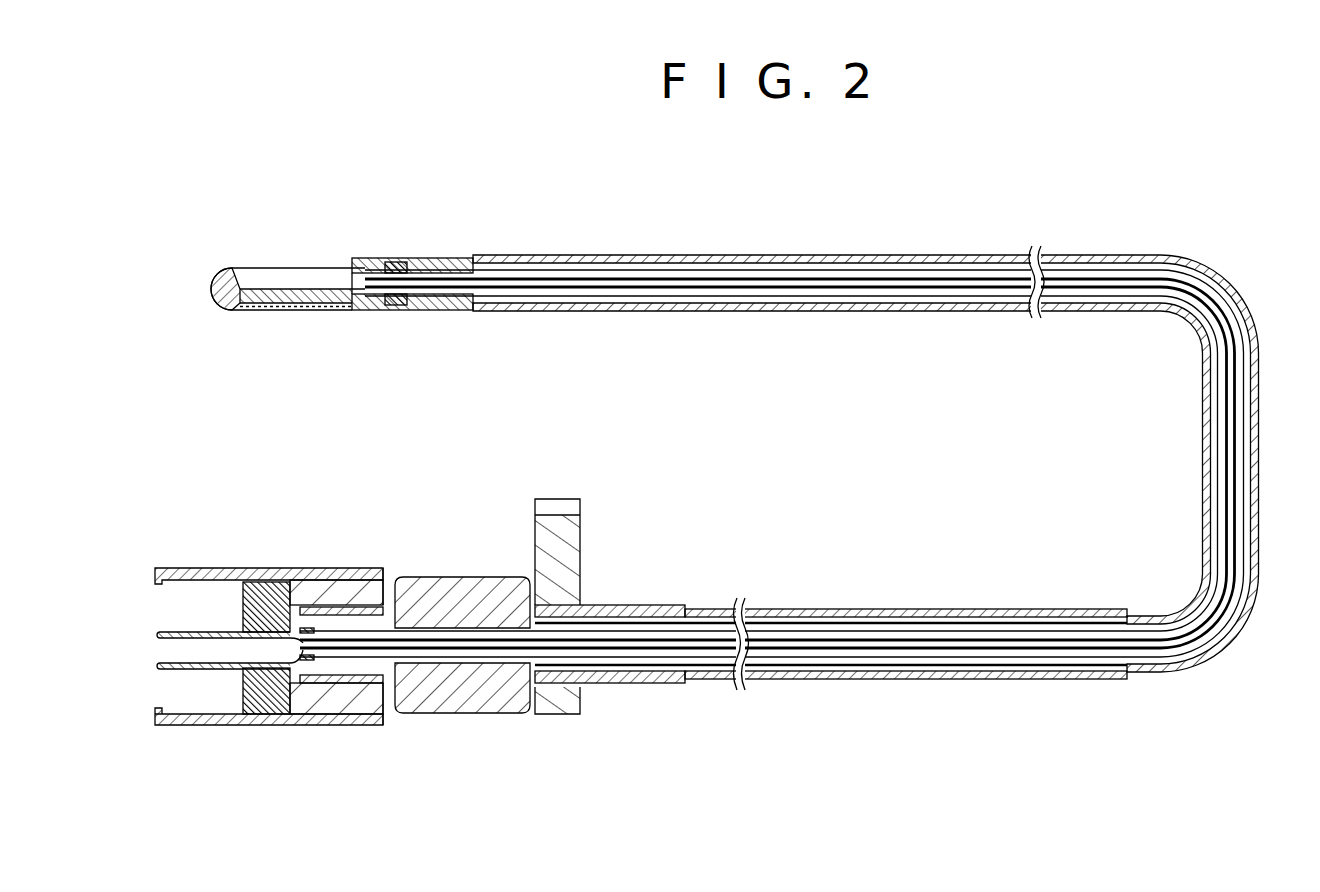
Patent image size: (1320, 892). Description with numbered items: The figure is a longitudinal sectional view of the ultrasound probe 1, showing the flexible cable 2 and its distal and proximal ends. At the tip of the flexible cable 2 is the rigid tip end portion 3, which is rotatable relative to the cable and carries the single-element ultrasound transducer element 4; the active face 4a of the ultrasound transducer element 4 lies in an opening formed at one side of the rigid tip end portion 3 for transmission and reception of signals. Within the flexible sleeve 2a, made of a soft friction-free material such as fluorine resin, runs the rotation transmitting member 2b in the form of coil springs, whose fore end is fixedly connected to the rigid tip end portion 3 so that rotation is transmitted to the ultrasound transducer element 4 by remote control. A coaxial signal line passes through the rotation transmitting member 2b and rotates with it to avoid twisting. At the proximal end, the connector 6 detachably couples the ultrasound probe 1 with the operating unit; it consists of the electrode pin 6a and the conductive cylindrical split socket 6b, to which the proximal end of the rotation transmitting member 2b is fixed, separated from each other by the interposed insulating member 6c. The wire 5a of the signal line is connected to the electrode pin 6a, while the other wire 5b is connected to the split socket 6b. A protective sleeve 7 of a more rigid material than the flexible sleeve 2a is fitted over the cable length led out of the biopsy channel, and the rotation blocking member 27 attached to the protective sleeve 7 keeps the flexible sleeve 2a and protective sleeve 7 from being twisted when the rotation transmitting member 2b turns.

The ultrasound probe 1 is at (820, 253).
The flexible cable 2 is at (779, 413).
The flexible sleeve 2a is at (717, 254).
The rotation transmitting member 2b is at (417, 263).
The rigid tip end portion 3 is at (228, 311).
The ultrasound transducer element 4 is at (288, 295).
The active face 4a is at (305, 288).
The wire 5a is at (290, 718).
The wire 5b is at (330, 569).
The connector 6 is at (237, 667).
The electrode pin 6a is at (180, 669).
The cylindrical split socket 6b is at (226, 570).
The insulating member 6c is at (252, 710).
The protective sleeve 7 is at (840, 682).
The rotation blocking member 27 is at (572, 557).